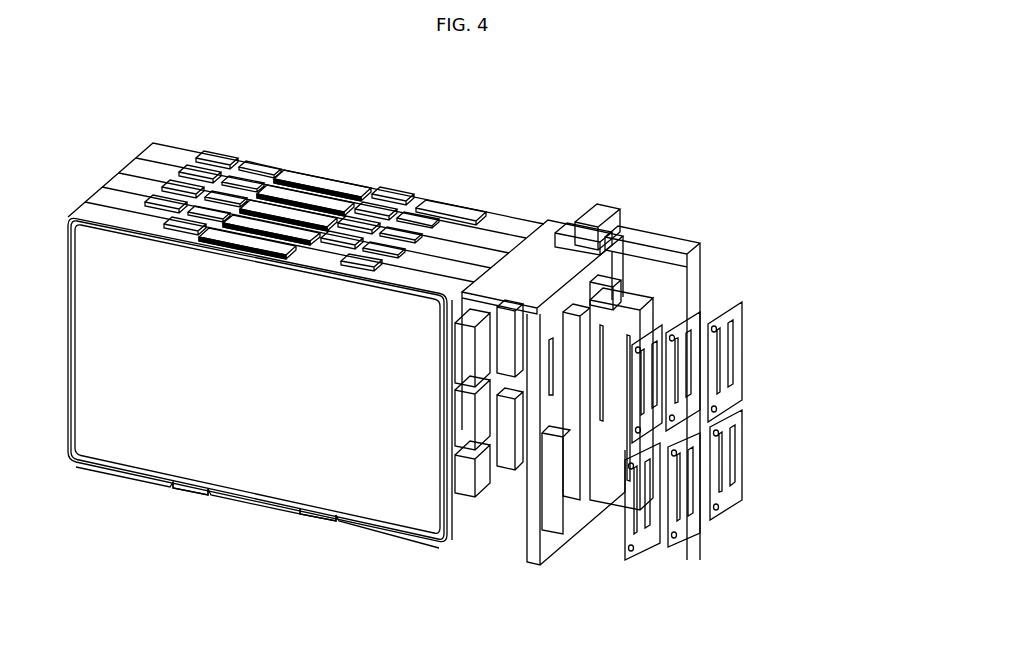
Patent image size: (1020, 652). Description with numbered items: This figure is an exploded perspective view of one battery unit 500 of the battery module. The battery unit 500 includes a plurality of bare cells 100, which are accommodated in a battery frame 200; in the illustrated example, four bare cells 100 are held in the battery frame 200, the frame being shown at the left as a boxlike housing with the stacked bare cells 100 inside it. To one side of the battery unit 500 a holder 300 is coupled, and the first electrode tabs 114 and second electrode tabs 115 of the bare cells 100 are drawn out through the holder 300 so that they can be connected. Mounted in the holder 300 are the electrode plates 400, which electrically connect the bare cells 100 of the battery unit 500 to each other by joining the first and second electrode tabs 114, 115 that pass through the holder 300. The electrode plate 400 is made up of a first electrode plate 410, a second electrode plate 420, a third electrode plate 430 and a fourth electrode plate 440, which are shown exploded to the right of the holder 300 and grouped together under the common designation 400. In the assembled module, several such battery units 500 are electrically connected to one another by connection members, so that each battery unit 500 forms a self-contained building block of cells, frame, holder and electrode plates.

The battery unit 500 is at (78, 99).
The bare cell 100 is at (268, 474).
The battery frame 200 is at (176, 158).
The first electrode tab 114 is at (472, 473).
The second electrode tab 115 is at (463, 357).
The holder 300 is at (553, 225).
The electrode plate 400 is at (835, 264).
The first electrode plate 410 is at (693, 270).
The second electrode plate 420 is at (638, 319).
The third electrode plate 430 is at (742, 449).
The fourth electrode plate 440 is at (742, 363).